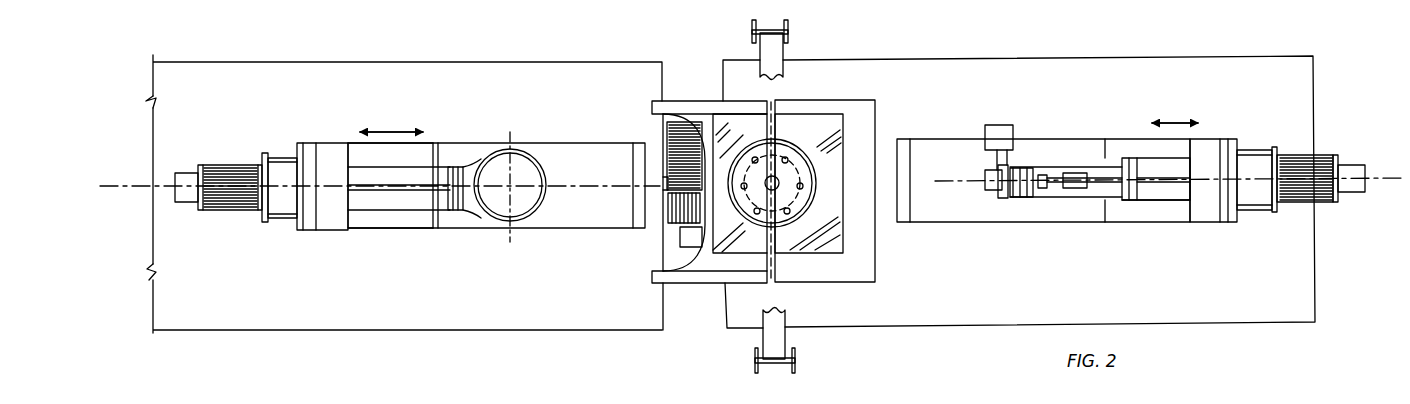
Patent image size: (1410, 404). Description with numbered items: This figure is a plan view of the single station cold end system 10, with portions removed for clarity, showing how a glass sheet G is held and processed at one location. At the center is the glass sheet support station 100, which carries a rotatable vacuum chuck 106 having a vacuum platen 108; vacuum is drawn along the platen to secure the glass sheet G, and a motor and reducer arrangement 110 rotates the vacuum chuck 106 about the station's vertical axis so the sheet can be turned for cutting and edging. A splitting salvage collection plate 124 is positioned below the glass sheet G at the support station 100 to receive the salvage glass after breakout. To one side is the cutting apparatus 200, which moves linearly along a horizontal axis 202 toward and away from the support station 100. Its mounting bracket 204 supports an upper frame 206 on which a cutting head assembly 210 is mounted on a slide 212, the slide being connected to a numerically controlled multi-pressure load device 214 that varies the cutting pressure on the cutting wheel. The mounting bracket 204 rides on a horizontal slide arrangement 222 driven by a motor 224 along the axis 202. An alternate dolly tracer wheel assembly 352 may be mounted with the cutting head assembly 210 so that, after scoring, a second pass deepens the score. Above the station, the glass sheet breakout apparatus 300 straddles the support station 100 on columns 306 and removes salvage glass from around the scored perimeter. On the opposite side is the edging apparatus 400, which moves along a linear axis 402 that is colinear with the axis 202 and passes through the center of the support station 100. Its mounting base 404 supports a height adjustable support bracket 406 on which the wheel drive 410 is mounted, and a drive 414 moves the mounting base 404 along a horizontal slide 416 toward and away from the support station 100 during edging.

The single station cold end system 10 is at (884, 52).
The glass sheet support station 100 is at (693, 95).
The rotatable vacuum chuck 106 is at (740, 205).
The vacuum platen 108 is at (790, 176).
The motor and reducer arrangement 110 is at (663, 123).
The splitting salvage collection plate 124 is at (857, 283).
The cutting apparatus 200 is at (1117, 81).
The horizontal axis 202 is at (1390, 172).
The mounting bracket 204 is at (1160, 203).
The upper frame 206 is at (1092, 163).
The cutting head assembly 210 is at (987, 185).
The slide 212 is at (1123, 205).
The multi-pressure load device 214 is at (1070, 190).
The horizontal slide arrangement 222 is at (1042, 138).
The motor 224 is at (1297, 155).
The glass sheet breakout apparatus 300 is at (804, 42).
The columns 306 is at (752, 24).
The dolly tracer wheel assembly 352 is at (985, 132).
The edging apparatus 400 is at (413, 116).
The linear axis 402 is at (166, 185).
The mounting base 404 is at (390, 200).
The height adjustable support bracket 406 is at (452, 166).
The wheel drive 410 is at (536, 160).
The drive 414 is at (227, 166).
The horizontal slide 416 is at (352, 143).
The glass sheet G is at (812, 114).